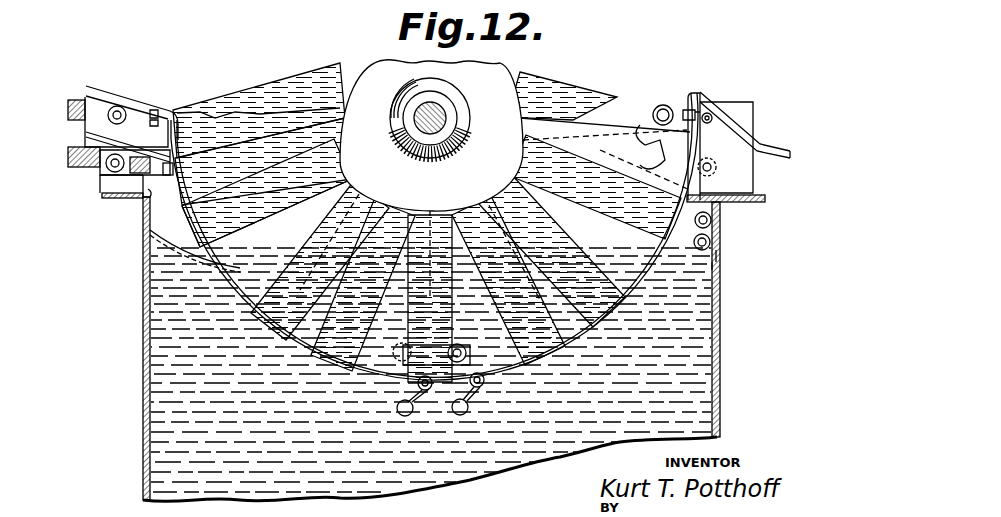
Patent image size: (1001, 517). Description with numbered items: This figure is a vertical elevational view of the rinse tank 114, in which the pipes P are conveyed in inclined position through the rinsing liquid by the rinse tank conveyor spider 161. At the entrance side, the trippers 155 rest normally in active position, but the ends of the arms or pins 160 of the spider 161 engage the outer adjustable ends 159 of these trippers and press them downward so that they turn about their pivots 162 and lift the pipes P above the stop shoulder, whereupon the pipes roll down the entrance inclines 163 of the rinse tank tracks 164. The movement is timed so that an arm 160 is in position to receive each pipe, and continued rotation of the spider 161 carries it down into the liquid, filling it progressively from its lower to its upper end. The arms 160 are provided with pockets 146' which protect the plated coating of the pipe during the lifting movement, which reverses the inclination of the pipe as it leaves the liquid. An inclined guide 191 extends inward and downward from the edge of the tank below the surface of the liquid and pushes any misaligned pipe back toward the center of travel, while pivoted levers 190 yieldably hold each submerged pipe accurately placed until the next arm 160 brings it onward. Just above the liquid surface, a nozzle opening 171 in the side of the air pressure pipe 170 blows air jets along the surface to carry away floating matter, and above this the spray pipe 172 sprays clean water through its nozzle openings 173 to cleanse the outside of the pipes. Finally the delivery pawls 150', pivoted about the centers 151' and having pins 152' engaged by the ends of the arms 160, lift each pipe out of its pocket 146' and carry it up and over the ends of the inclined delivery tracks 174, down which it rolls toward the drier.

The rinse tank 114 is at (143, 407).
The guide 191 is at (663, 397).
The arms or pins 160 is at (233, 82).
The rinse tank conveyor spider 161 is at (348, 72).
The pockets 146' is at (434, 258).
The rinse tank tracks 164 is at (145, 302).
The entrance inclines 163 is at (130, 143).
The outer adjustable ends 159 is at (160, 107).
The pivots 162 is at (83, 127).
The trippers 155 is at (83, 167).
The delivery pawls 150' is at (721, 128).
The pivot centers 151' is at (735, 128).
The inclined delivery tracks 174 is at (740, 115).
The pins 152' is at (681, 85).
The pipes P is at (662, 107).
The nozzle openings 173 is at (720, 227).
The spray pipe 172 is at (720, 237).
The nozzle opening 171 is at (715, 273).
The air pressure pipe 170 is at (720, 250).
The pivoted levers 190 is at (455, 415).